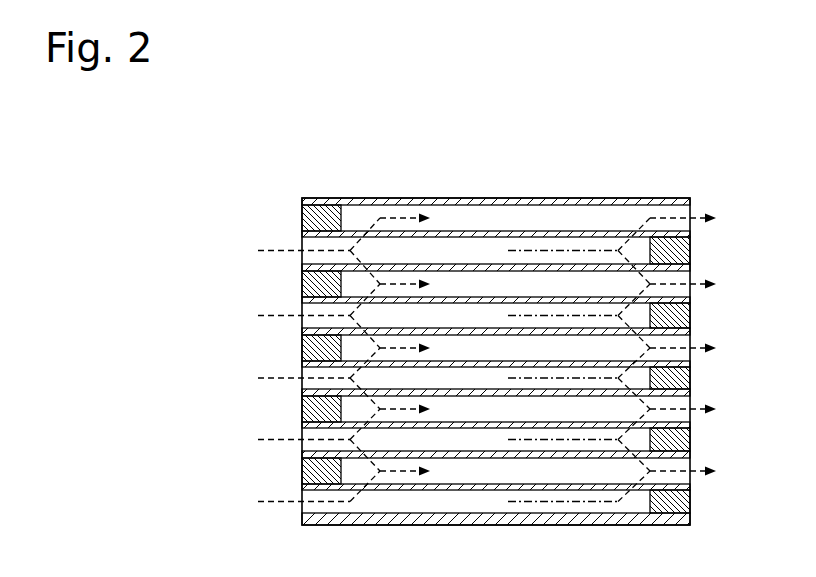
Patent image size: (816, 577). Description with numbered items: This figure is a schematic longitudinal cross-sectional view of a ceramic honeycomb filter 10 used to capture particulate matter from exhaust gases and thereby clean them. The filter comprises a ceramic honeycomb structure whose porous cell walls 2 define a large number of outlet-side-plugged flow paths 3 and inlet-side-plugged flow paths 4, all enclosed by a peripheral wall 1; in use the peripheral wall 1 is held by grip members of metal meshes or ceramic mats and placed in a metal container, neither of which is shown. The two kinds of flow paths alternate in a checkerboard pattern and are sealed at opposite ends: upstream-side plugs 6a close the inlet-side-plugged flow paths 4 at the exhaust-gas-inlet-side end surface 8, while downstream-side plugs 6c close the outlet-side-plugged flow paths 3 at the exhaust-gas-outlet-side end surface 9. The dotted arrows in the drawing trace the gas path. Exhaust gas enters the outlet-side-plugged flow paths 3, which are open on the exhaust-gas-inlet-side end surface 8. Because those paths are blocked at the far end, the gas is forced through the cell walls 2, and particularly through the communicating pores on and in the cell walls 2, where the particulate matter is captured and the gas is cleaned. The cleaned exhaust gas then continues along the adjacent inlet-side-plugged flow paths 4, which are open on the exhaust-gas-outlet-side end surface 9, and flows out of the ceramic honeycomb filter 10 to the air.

The ceramic honeycomb filter 10 is at (301, 165).
The peripheral wall 1 is at (378, 200).
The cell walls 2 is at (579, 235).
The outlet-side-plugged flow paths 3 is at (448, 250).
The inlet-side-plugged flow paths 4 is at (508, 285).
The upstream-side plugs 6a is at (300, 287).
The downstream-side plugs 6c is at (690, 309).
The exhaust-gas-inlet-side end surface 8 is at (300, 367).
The exhaust-gas-outlet-side end surface 9 is at (692, 355).